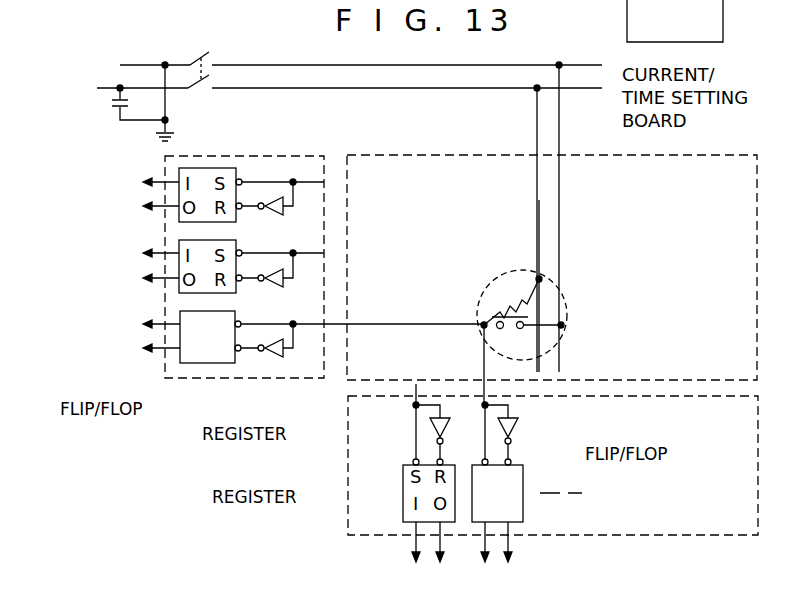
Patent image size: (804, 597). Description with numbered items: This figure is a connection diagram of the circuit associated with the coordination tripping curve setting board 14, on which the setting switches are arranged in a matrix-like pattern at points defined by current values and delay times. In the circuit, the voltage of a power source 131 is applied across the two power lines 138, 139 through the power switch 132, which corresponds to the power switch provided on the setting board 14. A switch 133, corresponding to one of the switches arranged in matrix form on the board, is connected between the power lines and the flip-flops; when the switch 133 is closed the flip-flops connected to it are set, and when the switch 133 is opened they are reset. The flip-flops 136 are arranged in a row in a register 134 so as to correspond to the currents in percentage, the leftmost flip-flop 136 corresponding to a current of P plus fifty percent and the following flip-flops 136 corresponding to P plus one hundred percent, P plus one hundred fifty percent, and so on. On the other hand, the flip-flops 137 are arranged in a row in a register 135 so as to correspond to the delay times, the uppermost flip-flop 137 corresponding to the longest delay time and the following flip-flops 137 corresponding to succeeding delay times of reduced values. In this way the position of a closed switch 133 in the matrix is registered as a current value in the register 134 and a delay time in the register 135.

The coordination tripping curve setting board 14 is at (676, 43).
The power source 131 is at (113, 110).
The power switch 132 is at (196, 51).
The switch 133 is at (500, 333).
The register 134 is at (348, 474).
The register 135 is at (245, 378).
The flip-flop 136 is at (523, 475).
The flip-flop 137 is at (180, 355).
The power line 138 is at (561, 236).
The power line 139 is at (539, 214).